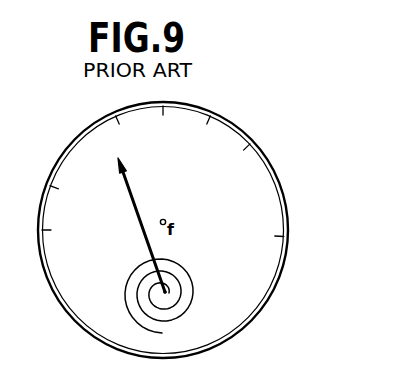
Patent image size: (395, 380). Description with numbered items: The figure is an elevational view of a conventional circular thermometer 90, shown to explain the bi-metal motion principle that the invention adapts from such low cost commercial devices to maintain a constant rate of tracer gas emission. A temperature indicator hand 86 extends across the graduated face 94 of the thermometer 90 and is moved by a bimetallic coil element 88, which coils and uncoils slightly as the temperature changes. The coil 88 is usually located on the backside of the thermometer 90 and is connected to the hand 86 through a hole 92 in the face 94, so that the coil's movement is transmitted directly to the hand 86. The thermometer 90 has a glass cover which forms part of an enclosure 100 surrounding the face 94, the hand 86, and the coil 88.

The thermometer 90 is at (290, 130).
The face 94 is at (238, 203).
The enclosure 100 is at (80, 148).
The temperature indicator hand 86 is at (138, 217).
The bimetallic coil element 88 is at (186, 291).
The hole 92 is at (187, 291).